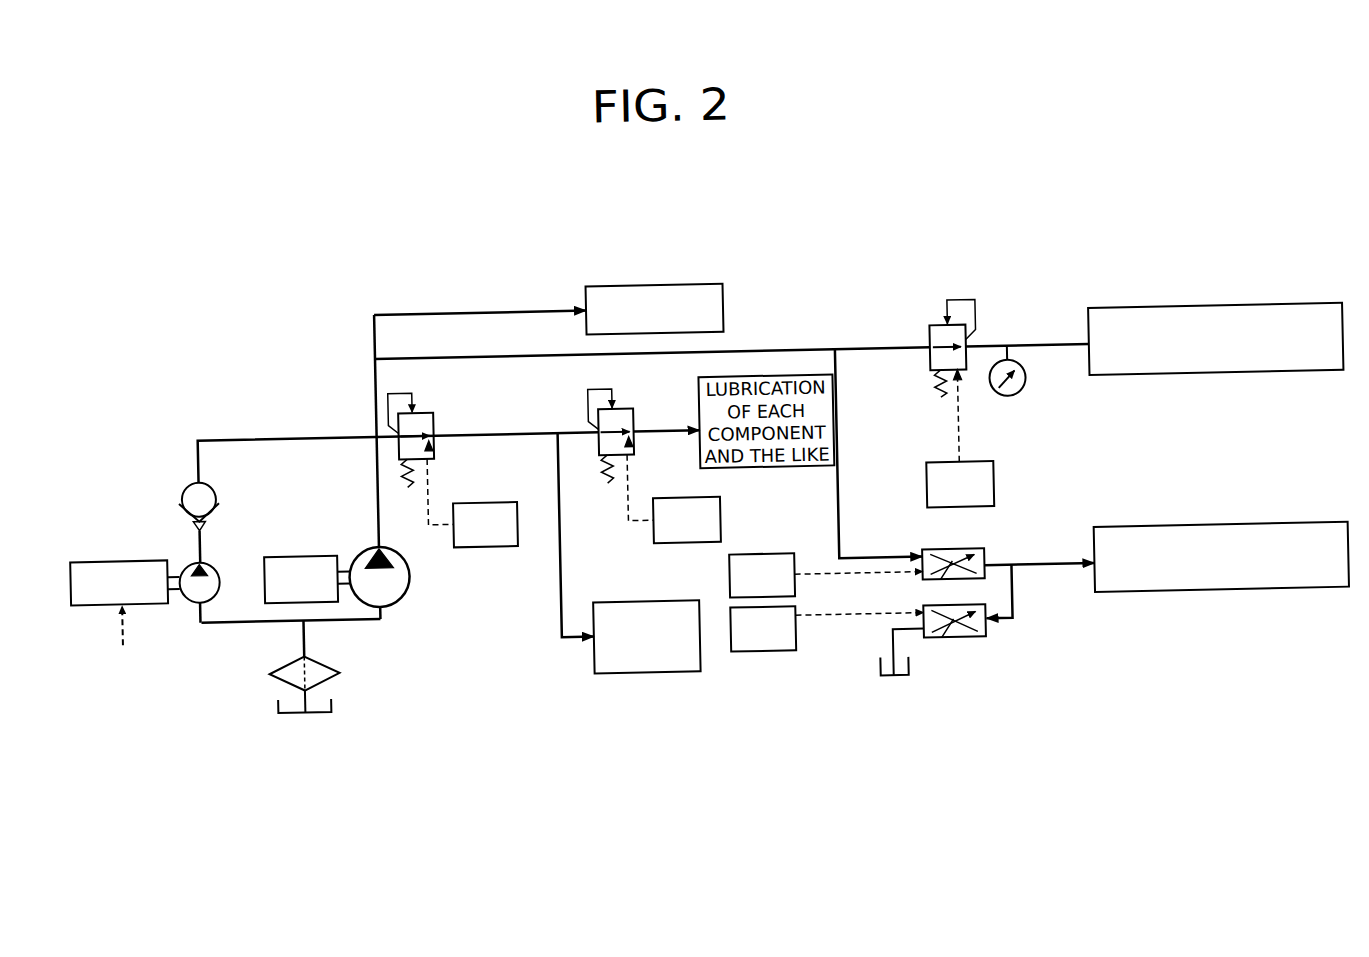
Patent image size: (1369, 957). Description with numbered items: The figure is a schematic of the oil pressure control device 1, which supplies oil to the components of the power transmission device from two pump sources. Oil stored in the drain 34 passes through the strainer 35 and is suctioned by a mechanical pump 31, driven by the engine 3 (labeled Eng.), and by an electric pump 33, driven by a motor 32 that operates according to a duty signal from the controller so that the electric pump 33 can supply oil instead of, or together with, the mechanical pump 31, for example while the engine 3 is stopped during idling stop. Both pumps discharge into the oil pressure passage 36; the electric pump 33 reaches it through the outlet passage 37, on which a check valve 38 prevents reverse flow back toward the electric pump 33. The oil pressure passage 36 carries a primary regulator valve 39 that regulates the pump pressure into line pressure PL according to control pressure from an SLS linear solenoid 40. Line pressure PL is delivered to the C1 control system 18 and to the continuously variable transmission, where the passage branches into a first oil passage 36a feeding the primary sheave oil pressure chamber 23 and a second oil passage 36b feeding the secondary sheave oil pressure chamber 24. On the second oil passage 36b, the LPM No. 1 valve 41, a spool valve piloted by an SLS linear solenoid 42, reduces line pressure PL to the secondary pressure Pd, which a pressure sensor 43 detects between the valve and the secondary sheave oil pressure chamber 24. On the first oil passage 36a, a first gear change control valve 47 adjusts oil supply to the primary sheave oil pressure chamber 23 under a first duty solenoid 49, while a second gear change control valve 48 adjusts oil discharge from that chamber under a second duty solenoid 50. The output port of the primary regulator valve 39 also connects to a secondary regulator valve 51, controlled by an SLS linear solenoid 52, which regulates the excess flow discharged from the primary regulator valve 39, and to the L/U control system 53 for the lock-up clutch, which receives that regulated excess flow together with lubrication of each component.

The oil pressure control device 1 is at (292, 243).
The engine 3 is at (303, 556).
The C1 control system 18 is at (646, 296).
The primary sheave oil pressure chamber 23 is at (1167, 544).
The secondary sheave oil pressure chamber 24 is at (1169, 325).
The mechanical pump 31 is at (398, 603).
The motor 32 is at (126, 557).
The electric pump 33 is at (213, 557).
The drain 34 is at (303, 712).
The strainer 35 is at (317, 662).
The oil pressure passage 36 is at (374, 376).
The first oil passage 36a is at (834, 507).
The second oil passage 36b is at (1020, 359).
The outlet passage 37 is at (194, 437).
The check valve 38 is at (213, 470).
The primary regulator valve 39 is at (424, 413).
The SLS linear solenoid 40 is at (467, 505).
The LPM No. 1 valve 41 is at (933, 336).
The SLS linear solenoid 42 is at (991, 496).
The pressure sensor 43 is at (1021, 403).
The first gear change control valve 47 is at (951, 561).
The second gear change control valve 48 is at (954, 649).
The first duty solenoid 49 is at (756, 563).
The second duty solenoid 50 is at (756, 660).
The secondary regulator valve 51 is at (619, 417).
The SLS linear solenoid 52 is at (687, 505).
The L/U control system 53 is at (652, 608).